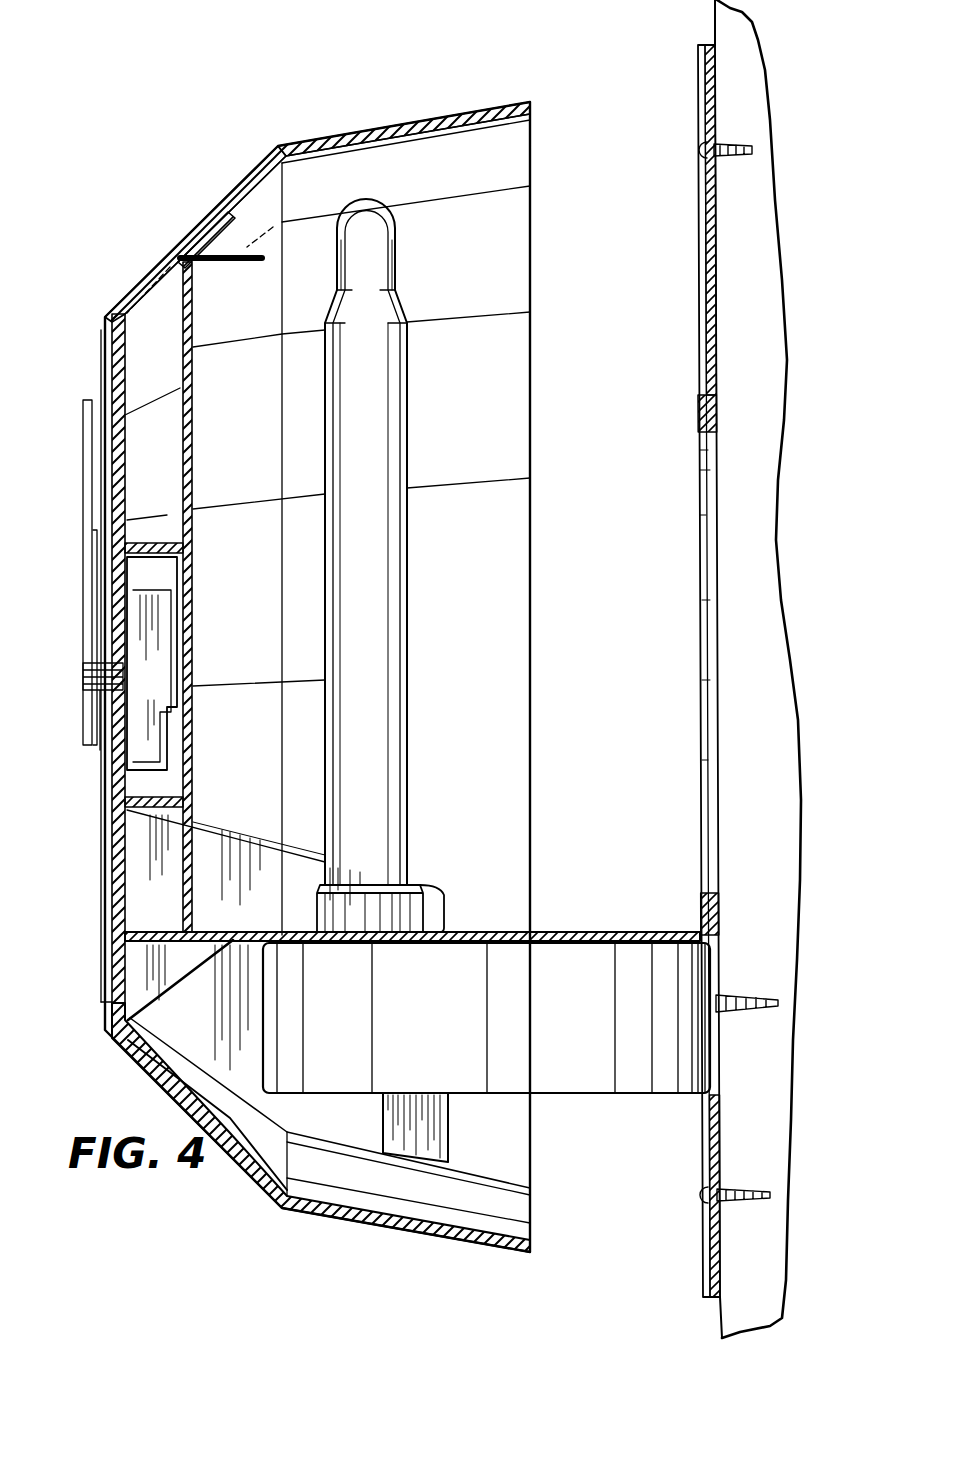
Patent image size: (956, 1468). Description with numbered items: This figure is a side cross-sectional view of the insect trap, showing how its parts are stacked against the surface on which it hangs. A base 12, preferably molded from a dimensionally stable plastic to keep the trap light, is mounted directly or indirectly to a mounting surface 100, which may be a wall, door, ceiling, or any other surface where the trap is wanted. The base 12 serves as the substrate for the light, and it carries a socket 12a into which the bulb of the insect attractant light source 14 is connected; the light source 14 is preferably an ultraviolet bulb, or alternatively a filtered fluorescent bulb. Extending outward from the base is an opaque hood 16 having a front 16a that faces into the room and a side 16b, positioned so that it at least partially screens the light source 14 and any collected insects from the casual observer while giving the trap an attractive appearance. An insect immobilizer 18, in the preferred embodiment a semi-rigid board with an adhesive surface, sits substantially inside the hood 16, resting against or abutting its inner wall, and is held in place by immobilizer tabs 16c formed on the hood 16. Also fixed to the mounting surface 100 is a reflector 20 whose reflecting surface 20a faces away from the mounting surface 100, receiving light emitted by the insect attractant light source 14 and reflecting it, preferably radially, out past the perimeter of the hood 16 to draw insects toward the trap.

The base 12 is at (582, 963).
The socket 12a is at (385, 918).
The insect attractant light source 14 is at (375, 477).
The opaque hood 16 is at (165, 262).
The front 16a is at (102, 378).
The side 16b is at (357, 132).
The immobilizer tabs 16c is at (242, 262).
The insect immobilizer 18 is at (193, 460).
The reflector 20 is at (700, 42).
The reflecting surface 20a is at (705, 208).
The mounting surface 100 is at (722, 26).